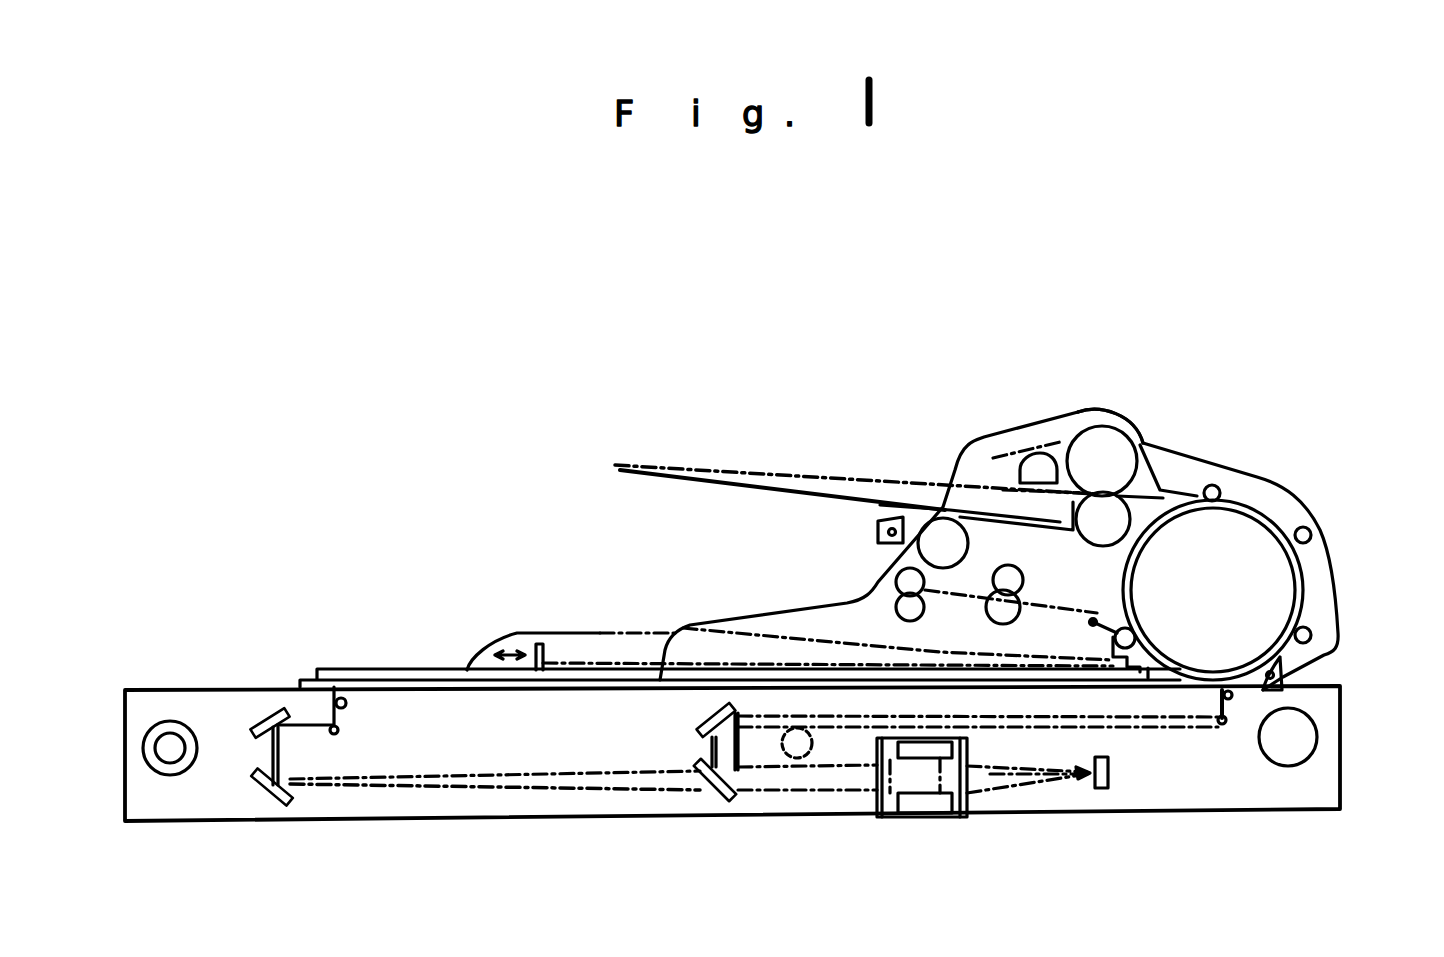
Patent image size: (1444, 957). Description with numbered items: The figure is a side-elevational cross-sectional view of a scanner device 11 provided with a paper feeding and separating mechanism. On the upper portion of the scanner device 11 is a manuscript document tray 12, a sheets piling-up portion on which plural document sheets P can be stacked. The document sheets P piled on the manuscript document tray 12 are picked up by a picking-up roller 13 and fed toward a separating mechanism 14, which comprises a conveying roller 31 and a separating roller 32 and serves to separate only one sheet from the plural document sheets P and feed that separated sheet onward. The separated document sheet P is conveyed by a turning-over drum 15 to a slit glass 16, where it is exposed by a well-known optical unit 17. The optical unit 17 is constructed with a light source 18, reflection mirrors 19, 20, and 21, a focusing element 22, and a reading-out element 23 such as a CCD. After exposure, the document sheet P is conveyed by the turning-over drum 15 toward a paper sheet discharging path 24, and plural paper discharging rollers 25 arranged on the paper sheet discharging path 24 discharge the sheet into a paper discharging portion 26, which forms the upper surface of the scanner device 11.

The document sheets P is at (990, 492).
The scanner device 11 is at (1355, 567).
The manuscript document tray 12 is at (852, 488).
The picking-up roller 13 is at (1042, 467).
The separating mechanism 14 is at (1150, 458).
The turning-over drum 15 is at (1287, 490).
The slit glass 16 is at (1237, 686).
The optical unit 17 is at (634, 797).
The light source 18 is at (344, 706).
The reflection mirror 19 is at (332, 702).
The reflection mirror 20 is at (268, 716).
The reflection mirror 21 is at (268, 802).
The focusing element 22 is at (974, 812).
The reading-out element 23 is at (1112, 777).
The paper sheet discharging path 24 is at (1055, 603).
The paper discharging rollers 25 is at (895, 600).
The paper discharging portion 26 is at (621, 663).
The conveying roller 31 is at (1104, 415).
The separating roller 32 is at (1117, 518).